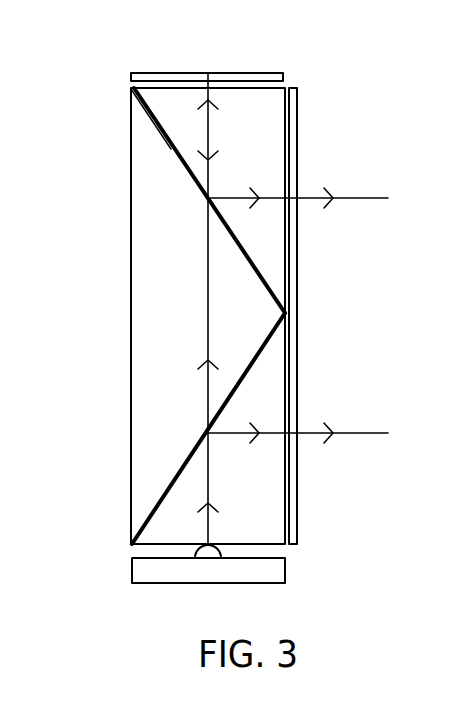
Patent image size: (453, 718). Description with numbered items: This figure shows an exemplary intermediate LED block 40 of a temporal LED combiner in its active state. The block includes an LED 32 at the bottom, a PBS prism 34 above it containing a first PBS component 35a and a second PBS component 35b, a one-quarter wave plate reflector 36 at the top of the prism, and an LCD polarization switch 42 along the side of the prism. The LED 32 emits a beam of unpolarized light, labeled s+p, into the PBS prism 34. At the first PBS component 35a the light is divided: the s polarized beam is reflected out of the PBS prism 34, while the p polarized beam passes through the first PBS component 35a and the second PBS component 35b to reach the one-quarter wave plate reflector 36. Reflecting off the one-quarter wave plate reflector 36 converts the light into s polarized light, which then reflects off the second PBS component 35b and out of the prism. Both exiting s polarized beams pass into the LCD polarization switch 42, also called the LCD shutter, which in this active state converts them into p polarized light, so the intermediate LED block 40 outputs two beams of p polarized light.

The intermediate LED block 40 is at (100, 38).
The LED 32 is at (131, 566).
The PBS prism 34 is at (131, 320).
The first PBS component 35a is at (200, 441).
The second PBS component 35b is at (199, 198).
The one-quarter wave plate reflector 36 is at (283, 77).
The LCD polarization switch 42 is at (299, 319).